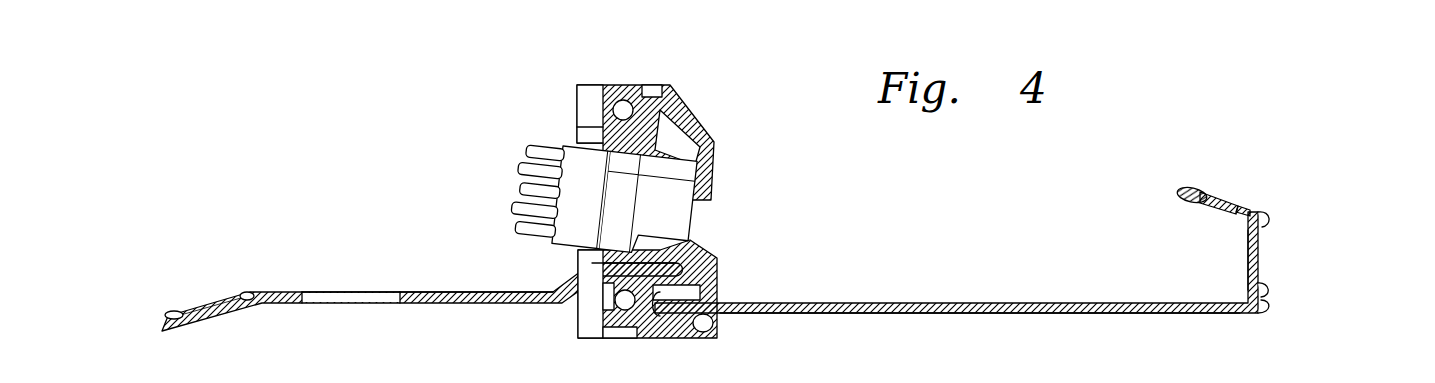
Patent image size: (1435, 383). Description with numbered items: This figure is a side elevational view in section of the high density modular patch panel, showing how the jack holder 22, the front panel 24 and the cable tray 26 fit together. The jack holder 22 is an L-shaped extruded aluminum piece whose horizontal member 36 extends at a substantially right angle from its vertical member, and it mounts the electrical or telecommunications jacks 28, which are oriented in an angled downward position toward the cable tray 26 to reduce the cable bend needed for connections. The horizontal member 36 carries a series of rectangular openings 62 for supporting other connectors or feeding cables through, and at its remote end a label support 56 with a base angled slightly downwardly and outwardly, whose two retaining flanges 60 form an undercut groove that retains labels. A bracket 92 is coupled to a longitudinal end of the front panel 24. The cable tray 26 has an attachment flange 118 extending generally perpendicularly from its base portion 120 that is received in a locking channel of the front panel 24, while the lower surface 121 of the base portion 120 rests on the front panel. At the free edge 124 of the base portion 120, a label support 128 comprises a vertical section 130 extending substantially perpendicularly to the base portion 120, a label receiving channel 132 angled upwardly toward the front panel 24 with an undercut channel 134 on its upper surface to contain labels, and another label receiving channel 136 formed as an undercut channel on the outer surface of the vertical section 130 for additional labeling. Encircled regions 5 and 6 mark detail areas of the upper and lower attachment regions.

The upper mounting clip detail area 5 is at (662, 133).
The lower mounting clip detail area 6 is at (647, 300).
The jack holder 22 is at (290, 288).
The front panel 24 is at (618, 84).
The cable tray 26 is at (952, 292).
The electrical or telecommunications jacks 28 is at (512, 157).
The horizontal member 36 is at (425, 292).
The label support 56 is at (203, 305).
The retaining flanges 60 is at (243, 296).
The rectangular openings 62 is at (398, 294).
The bracket 92 is at (568, 312).
The attachment flange 118 is at (682, 325).
The base portion 120 is at (865, 311).
The lower surface 121 is at (1085, 315).
The free edge 124 is at (1250, 315).
The label support 128 is at (1282, 194).
The vertical section 130 is at (1248, 253).
The label receiving channel 132 is at (1205, 208).
The undercut channel 134 is at (1222, 205).
The label receiving channel 136 is at (1261, 250).